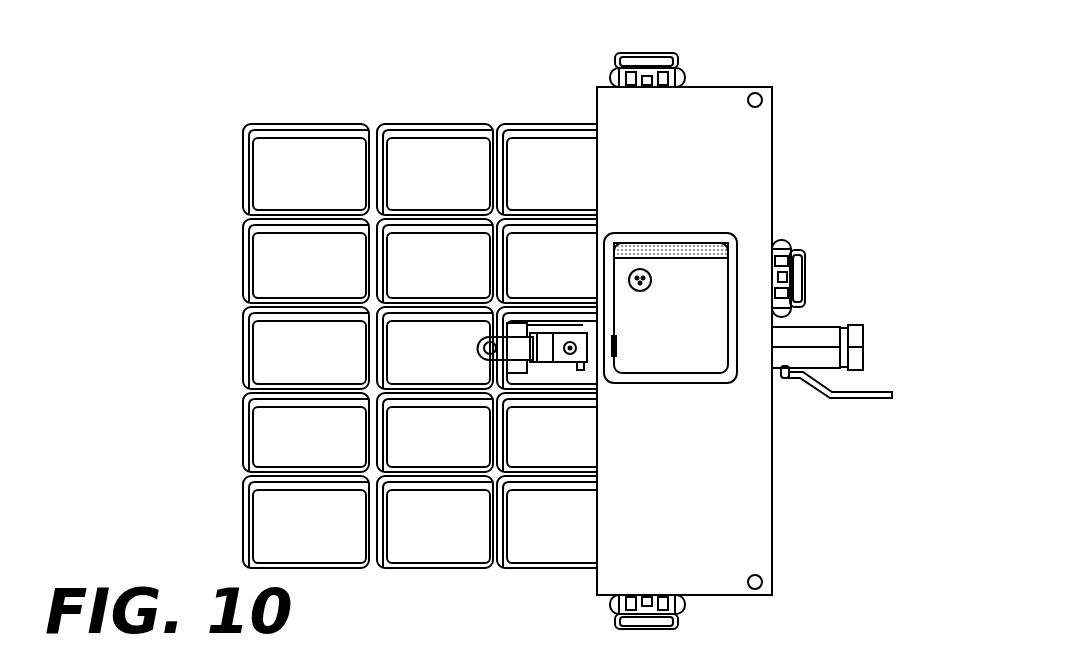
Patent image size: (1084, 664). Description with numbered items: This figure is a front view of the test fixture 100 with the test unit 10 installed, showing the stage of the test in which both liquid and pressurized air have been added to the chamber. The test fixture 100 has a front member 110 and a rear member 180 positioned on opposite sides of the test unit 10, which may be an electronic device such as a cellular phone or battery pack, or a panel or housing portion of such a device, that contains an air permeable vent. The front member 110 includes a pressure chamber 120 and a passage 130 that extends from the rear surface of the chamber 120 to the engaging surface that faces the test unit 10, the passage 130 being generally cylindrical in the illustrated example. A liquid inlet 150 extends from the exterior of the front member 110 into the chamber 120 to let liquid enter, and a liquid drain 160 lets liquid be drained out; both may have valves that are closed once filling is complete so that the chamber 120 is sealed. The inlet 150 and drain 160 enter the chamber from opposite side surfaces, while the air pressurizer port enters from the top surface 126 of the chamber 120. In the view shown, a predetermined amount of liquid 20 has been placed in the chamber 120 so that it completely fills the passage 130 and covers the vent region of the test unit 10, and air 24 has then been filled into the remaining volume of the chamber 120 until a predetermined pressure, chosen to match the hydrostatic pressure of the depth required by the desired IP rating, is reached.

The test unit 10 is at (281, 157).
The test fixture 100 is at (373, 88).
The liquid drain 160 is at (560, 362).
The front member 110 is at (735, 537).
The rear member 180 is at (760, 130).
The pressure chamber 120 is at (708, 345).
The air 24 is at (697, 247).
The top surface 126 is at (662, 233).
The passage 130 is at (633, 275).
The liquid 20 is at (716, 300).
The liquid inlet 150 is at (815, 335).